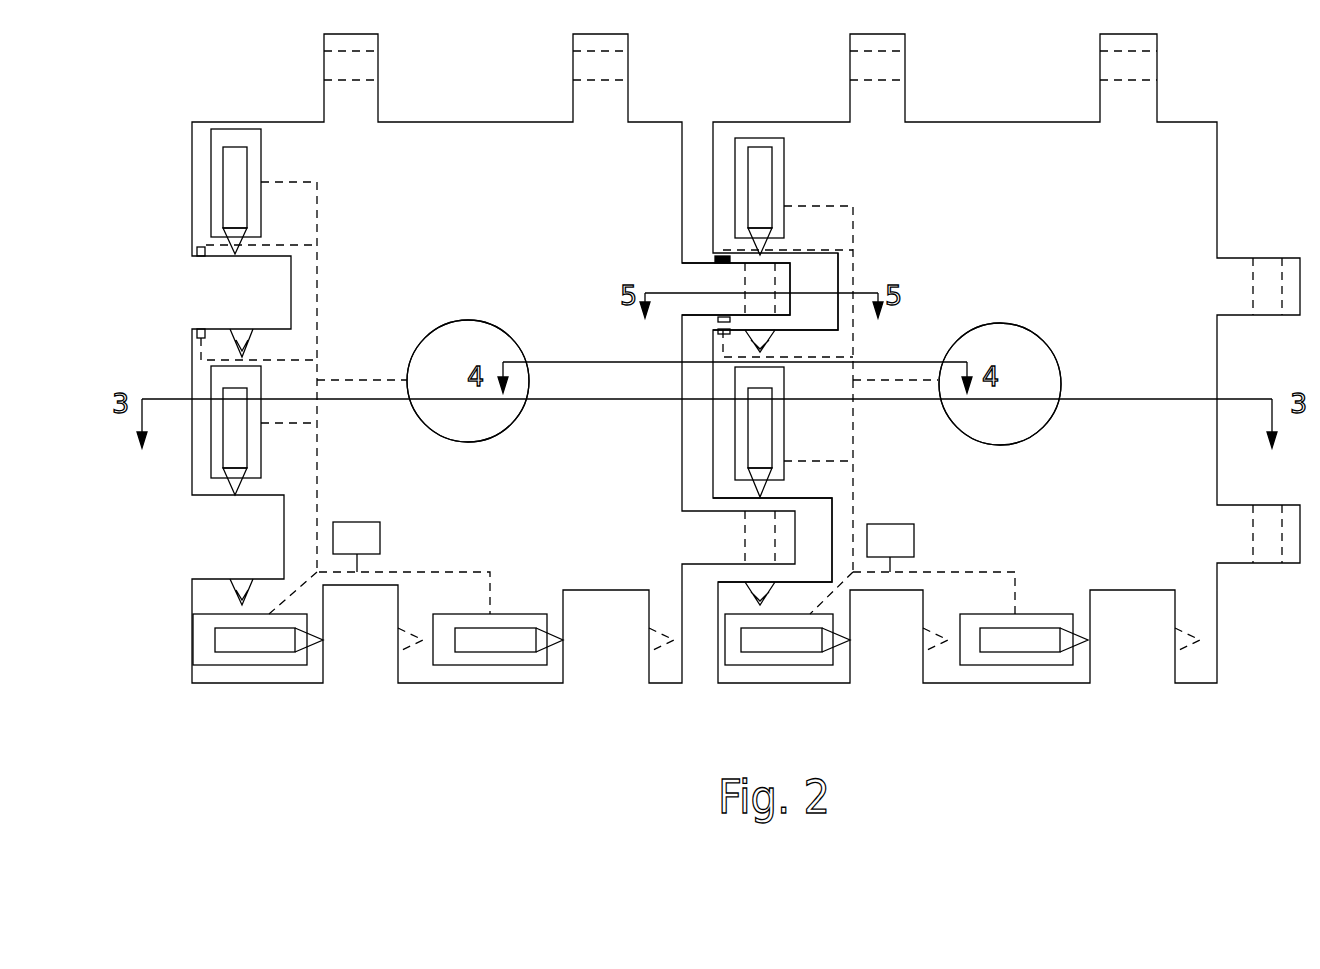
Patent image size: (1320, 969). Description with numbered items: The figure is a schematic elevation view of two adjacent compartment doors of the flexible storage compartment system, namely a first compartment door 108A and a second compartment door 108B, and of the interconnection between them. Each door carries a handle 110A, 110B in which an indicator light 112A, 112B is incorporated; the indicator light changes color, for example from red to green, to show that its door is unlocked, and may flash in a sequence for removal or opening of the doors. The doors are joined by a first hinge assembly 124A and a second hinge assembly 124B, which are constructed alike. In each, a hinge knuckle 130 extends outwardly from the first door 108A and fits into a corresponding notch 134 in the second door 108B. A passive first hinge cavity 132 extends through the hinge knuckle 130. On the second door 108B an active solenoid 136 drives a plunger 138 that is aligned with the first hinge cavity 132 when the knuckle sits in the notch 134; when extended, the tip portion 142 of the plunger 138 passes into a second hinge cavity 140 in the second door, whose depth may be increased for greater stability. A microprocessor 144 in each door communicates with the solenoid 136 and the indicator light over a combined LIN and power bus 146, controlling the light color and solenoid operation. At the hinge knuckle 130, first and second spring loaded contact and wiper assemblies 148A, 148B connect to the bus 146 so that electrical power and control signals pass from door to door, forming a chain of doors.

The first compartment door 108A is at (457, 157).
The second compartment door 108B is at (1007, 155).
The handle 110A is at (437, 328).
The handle 110B is at (1062, 384).
The indicator light 112A is at (467, 347).
The indicator light 112B is at (1040, 338).
The first hinge assembly 124A is at (830, 238).
The second hinge assembly 124B is at (832, 488).
The hinge knuckle 130 is at (700, 262).
The first hinge cavity 132 is at (775, 282).
The notch 134 is at (838, 318).
The solenoid 136 is at (784, 200).
The plunger 138 is at (760, 182).
The second hinge cavity 140 is at (770, 347).
The tip portion 142 is at (855, 211).
The microprocessor 144 is at (914, 538).
The combined LIN and power bus 146 is at (853, 437).
The first spring loaded contact and wiper assembly 148A is at (700, 272).
The second spring loaded contact and wiper assembly 148B is at (702, 303).